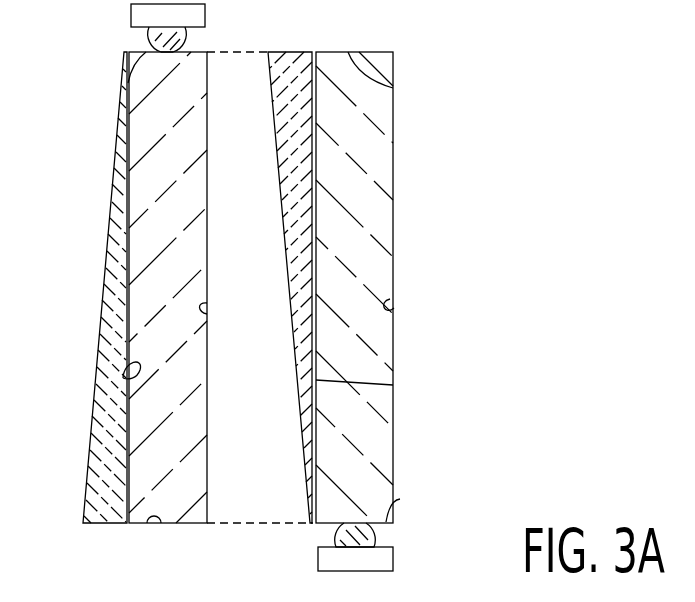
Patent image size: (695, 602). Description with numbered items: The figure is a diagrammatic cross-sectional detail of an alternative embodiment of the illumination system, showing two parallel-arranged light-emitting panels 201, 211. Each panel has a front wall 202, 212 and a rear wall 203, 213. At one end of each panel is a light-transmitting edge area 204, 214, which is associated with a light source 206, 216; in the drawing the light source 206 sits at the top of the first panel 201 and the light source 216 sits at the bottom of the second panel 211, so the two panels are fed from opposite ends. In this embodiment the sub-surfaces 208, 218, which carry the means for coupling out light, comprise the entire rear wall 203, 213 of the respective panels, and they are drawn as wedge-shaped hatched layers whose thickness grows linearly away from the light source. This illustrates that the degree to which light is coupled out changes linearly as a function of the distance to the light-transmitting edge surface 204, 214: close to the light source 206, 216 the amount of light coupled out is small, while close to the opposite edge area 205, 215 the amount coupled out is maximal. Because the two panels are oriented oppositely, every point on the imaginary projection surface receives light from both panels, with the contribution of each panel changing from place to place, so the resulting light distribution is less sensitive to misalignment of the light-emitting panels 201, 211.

The light-emitting panel 201 is at (148, 242).
The front wall 202 is at (208, 313).
The rear wall 203 is at (128, 378).
The light-transmitting edge area 204 is at (128, 83).
The edge area 205 is at (162, 528).
The light source 206 is at (152, 33).
The sub-surface 208 is at (105, 467).
The light-emitting panel 211 is at (373, 210).
The front wall 212 is at (393, 308).
The rear wall 213 is at (393, 385).
The light-transmitting edge area 214 is at (400, 499).
The edge area 215 is at (393, 88).
The light source 216 is at (373, 537).
The sub-surface 218 is at (300, 228).